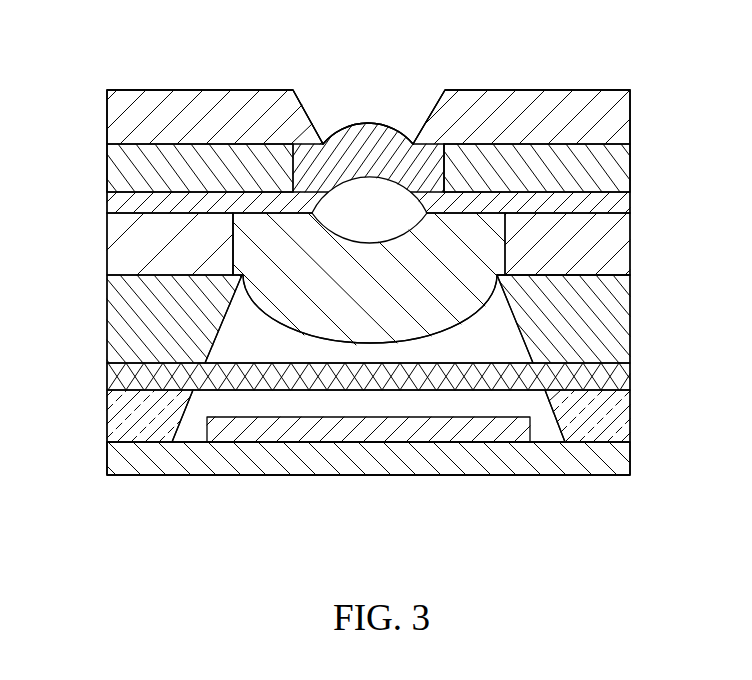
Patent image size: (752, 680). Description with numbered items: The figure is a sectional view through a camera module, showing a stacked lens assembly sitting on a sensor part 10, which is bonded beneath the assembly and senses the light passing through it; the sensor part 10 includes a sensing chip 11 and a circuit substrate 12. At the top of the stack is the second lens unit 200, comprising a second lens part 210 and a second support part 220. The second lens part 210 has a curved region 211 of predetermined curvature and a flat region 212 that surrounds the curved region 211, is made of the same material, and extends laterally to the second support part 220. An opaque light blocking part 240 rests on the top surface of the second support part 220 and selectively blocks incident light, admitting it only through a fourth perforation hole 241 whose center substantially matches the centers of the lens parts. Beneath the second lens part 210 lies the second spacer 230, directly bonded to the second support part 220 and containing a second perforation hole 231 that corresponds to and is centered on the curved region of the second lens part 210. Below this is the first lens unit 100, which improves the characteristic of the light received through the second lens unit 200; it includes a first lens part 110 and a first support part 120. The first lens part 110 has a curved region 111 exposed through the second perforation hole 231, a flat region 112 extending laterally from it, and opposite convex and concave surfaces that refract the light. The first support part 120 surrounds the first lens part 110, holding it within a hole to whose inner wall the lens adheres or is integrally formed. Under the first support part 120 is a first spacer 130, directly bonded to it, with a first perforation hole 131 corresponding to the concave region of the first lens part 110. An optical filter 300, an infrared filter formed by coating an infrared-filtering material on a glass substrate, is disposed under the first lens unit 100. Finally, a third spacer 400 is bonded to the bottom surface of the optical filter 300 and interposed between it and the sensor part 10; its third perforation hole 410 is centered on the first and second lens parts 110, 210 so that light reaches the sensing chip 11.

The sensor part 10 is at (238, 527).
The sensing chip 11 is at (228, 430).
The circuit substrate 12 is at (158, 458).
The first lens unit 100 is at (107, 237).
The first lens part 110 is at (458, 303).
The curved region 111 is at (333, 343).
The flat region 112 is at (232, 264).
The first support part 120 is at (630, 238).
The first spacer 130 is at (630, 317).
The first perforation hole 131 is at (440, 344).
The second lens unit 200 is at (107, 168).
The second lens part 210 is at (361, 150).
The curved region 211 is at (412, 143).
The flat region 212 is at (444, 162).
The second support part 220 is at (630, 168).
The second spacer 230 is at (630, 200).
The second perforation hole 231 is at (377, 203).
The light blocking part 240 is at (630, 110).
The fourth perforation hole 241 is at (366, 104).
The optical filter 300 is at (630, 375).
The third spacer 400 is at (630, 414).
The third perforation hole 410 is at (378, 405).